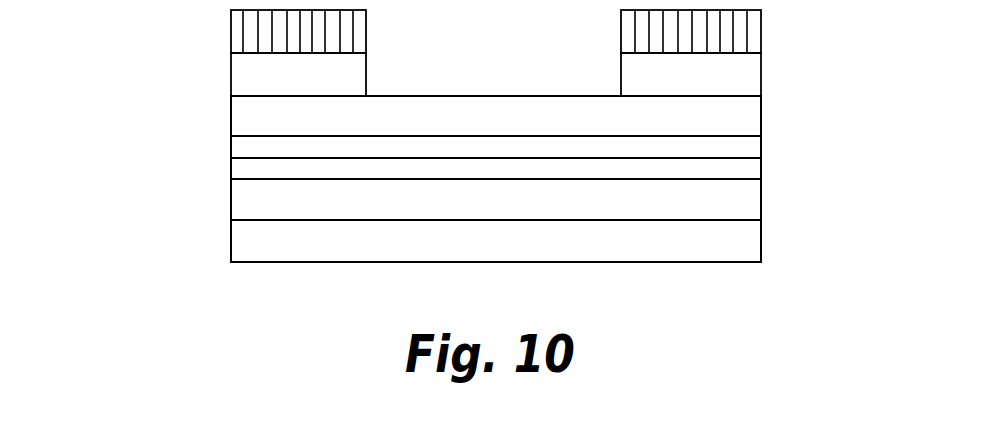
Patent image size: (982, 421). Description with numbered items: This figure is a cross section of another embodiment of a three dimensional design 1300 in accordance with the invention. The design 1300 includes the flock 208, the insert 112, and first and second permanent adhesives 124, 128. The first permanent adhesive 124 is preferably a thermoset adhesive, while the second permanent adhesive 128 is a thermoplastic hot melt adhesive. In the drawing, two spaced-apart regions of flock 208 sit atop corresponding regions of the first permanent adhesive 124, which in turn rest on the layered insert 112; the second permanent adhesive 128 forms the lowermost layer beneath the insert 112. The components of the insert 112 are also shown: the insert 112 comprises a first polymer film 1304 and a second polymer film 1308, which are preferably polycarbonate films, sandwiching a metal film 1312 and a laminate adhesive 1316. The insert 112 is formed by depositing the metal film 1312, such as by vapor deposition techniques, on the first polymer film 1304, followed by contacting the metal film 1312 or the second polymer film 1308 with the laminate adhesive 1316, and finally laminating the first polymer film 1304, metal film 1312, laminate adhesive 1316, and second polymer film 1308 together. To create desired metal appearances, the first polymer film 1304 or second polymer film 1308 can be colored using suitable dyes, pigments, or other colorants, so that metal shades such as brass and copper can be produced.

The design 1300 is at (191, 285).
The flock 208 is at (762, 17).
The first permanent adhesive 124 is at (762, 68).
The insert 112 is at (765, 93).
The first polymer film 1304 is at (230, 96).
The metal film 1312 is at (230, 134).
The laminate adhesive 1316 is at (232, 170).
The second polymer film 1308 is at (230, 205).
The second permanent adhesive 128 is at (762, 243).